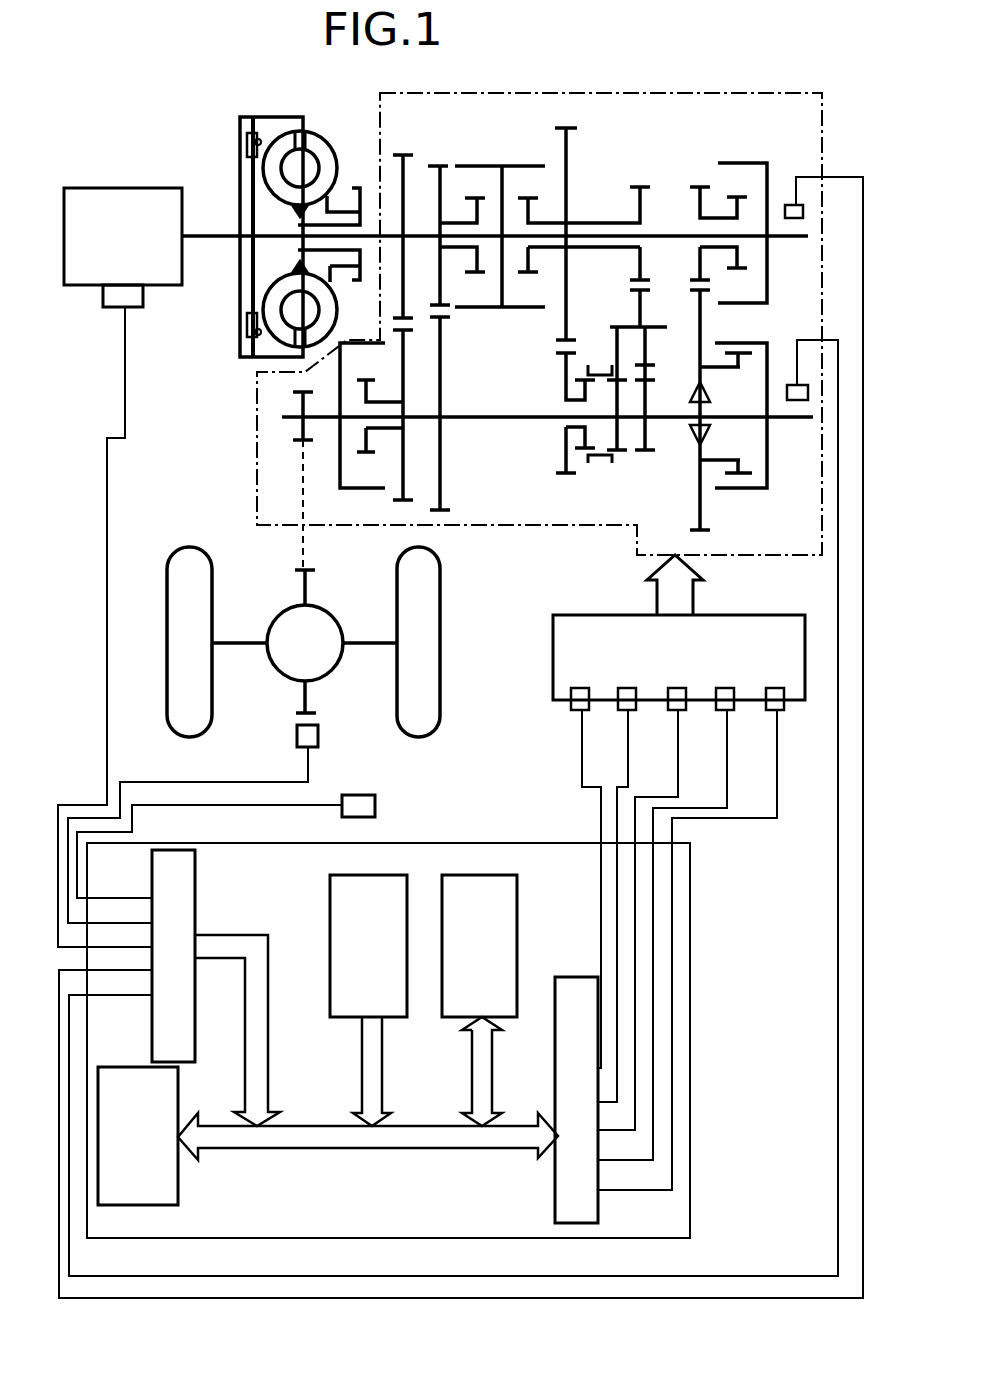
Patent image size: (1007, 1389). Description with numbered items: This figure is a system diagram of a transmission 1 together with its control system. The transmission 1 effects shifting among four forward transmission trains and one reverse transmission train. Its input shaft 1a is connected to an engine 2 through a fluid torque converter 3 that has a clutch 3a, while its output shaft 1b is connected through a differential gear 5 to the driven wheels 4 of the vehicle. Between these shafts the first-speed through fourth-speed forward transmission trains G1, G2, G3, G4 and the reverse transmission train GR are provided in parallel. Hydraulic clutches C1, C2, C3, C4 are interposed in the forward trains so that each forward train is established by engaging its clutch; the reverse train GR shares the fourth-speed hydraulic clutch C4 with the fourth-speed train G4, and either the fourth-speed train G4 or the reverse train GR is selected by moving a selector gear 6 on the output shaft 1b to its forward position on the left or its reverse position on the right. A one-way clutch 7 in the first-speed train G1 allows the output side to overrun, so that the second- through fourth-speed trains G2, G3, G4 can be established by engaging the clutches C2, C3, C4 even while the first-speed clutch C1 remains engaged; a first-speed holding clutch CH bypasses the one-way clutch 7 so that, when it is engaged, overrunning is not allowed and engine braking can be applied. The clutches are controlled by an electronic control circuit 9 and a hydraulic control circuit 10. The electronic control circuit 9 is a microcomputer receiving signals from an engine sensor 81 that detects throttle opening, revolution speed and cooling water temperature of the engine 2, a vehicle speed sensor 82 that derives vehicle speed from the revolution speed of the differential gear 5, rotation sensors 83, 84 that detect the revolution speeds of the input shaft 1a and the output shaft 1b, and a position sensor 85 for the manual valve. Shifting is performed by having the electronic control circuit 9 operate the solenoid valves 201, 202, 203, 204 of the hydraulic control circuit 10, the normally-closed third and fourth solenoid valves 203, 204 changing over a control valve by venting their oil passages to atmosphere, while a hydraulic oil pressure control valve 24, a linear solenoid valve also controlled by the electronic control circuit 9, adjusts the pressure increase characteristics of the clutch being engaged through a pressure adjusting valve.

The transmission 1 is at (660, 90).
The input shaft 1a is at (662, 232).
The output shaft 1b is at (500, 420).
The engine 2 is at (126, 192).
The fluid torque converter 3 is at (337, 128).
The clutch 3a is at (253, 180).
The driven wheels 4 is at (182, 655).
The differential gear 5 is at (338, 618).
The selector gear 6 is at (600, 362).
The one-way clutch 7 is at (697, 430).
The electronic control circuit 9 is at (690, 1113).
The hydraulic control circuit 10 is at (787, 616).
The first solenoid valve 201 is at (573, 712).
The second solenoid valve 202 is at (618, 712).
The No. 3 solenoid valve 203 is at (682, 712).
The No. 4 solenoid valve 204 is at (730, 712).
The hydraulic oil pressure control valve 24 is at (781, 712).
The engine sensor 81 is at (108, 308).
The vehicle speed sensor 82 is at (318, 735).
The rotation sensor 83 is at (793, 220).
The rotation sensor 84 is at (793, 400).
The position sensor 85 is at (375, 806).
The first-speed hydraulic clutch C1 is at (740, 163).
The second-speed hydraulic clutch C2 is at (468, 166).
The third-speed hydraulic clutch C3 is at (340, 490).
The fourth-speed hydraulic clutch C4 is at (530, 165).
The first-speed transmission train G1 is at (699, 181).
The second-speed transmission train G2 is at (451, 336).
The third-speed transmission train G3 is at (408, 140).
The fourth-speed transmission train G4 is at (552, 347).
The reverse transmission train GR is at (616, 181).
The first-speed holding clutch CH is at (743, 488).